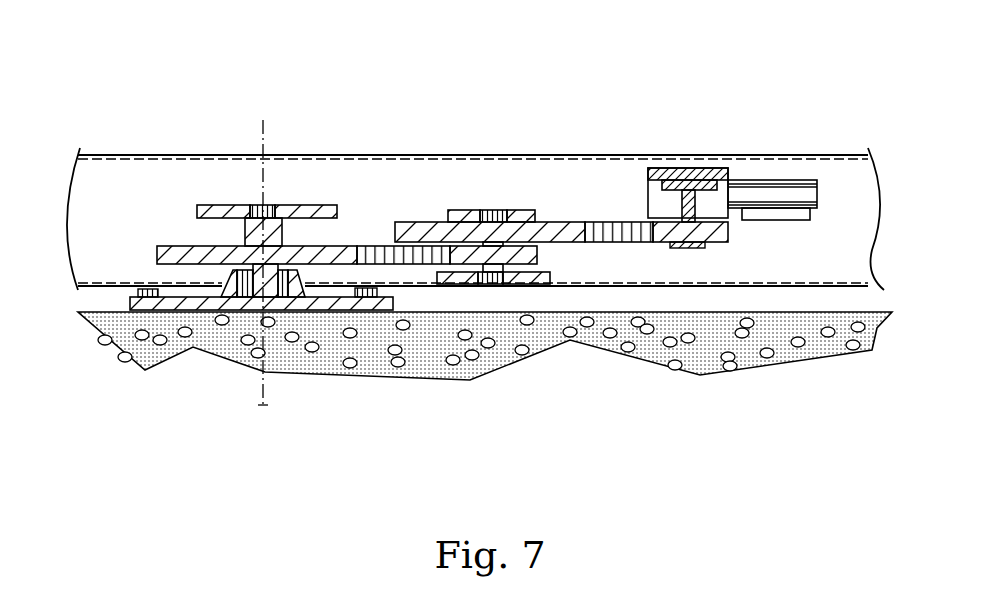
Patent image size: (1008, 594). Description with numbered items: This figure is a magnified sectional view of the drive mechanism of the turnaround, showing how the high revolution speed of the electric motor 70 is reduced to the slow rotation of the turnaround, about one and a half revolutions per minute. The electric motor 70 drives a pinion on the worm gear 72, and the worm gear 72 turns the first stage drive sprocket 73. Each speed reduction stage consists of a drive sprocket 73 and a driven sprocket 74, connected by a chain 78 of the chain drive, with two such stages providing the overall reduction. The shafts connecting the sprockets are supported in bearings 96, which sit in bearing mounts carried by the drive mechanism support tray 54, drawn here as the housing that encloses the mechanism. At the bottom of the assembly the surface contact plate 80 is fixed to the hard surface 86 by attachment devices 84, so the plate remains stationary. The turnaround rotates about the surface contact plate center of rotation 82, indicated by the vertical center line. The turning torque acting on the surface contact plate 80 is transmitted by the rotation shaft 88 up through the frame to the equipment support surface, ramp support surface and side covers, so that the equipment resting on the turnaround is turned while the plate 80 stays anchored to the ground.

The drive mechanism support tray 54 is at (835, 155).
The electric motor 70 is at (763, 185).
The worm gear 72 is at (666, 178).
The drive sprocket 73 is at (537, 258).
The driven sprocket 74 is at (173, 246).
The chain 78 is at (599, 222).
The surface contact plate 80 is at (300, 296).
The surface contact plate center of rotation 82 is at (263, 405).
The attachment devices 84 is at (140, 291).
The hard surface 86 is at (175, 310).
The rotation shaft 88 is at (244, 218).
The bearing 96 is at (277, 205).